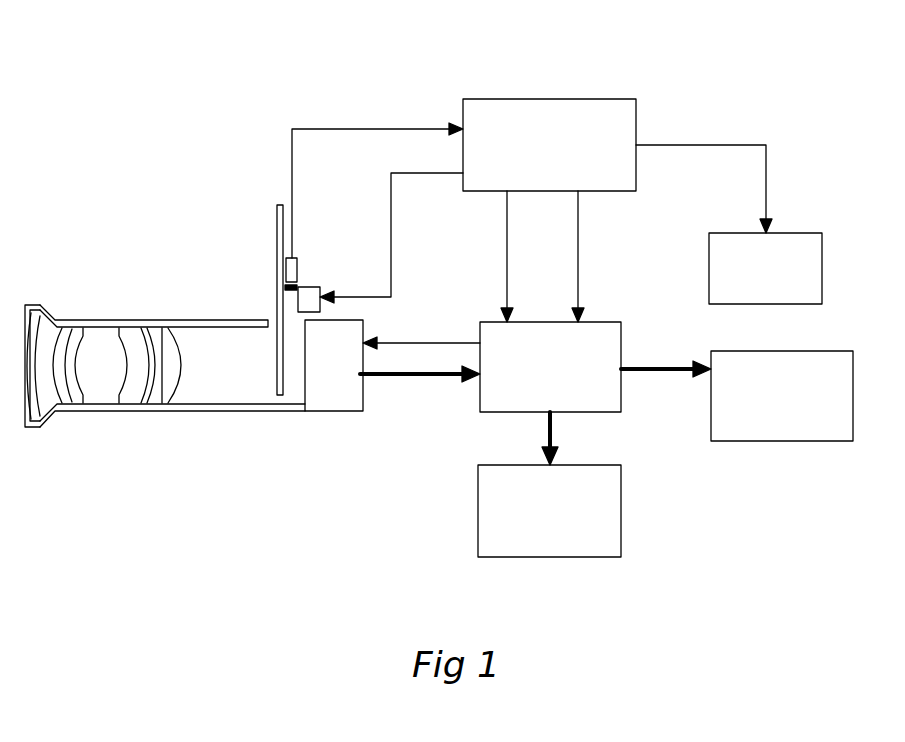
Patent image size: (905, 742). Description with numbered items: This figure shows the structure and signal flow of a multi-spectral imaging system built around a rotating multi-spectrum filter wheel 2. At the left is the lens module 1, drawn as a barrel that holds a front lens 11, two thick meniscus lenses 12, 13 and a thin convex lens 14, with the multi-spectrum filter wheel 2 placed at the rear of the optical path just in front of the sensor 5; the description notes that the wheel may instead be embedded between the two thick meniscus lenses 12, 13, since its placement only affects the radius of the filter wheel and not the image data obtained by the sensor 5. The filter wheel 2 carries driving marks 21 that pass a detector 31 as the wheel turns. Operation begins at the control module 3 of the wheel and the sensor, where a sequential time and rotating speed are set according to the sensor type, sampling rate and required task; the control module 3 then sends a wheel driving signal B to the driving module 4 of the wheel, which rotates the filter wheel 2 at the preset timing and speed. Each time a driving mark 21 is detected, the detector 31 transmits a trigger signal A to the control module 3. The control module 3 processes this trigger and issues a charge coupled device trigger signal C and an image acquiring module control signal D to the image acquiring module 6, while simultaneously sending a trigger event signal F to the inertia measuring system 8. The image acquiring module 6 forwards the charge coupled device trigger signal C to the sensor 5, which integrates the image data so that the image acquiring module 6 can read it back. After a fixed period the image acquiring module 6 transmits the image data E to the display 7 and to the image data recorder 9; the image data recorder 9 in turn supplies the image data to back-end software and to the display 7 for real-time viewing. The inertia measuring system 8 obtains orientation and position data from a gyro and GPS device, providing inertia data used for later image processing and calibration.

The lens housing 1 is at (200, 323).
The first lens element 11 is at (40, 322).
The thick meniscus lens 12 is at (68, 333).
The thick meniscus lens 13 is at (123, 333).
The thin convex lens 14 is at (165, 332).
The multi-spectrum filter wheel 2 is at (278, 210).
The driving marks 21 is at (310, 250).
The detector 31 is at (292, 258).
The driving module of the wheel 4 is at (313, 293).
The sensor 5 is at (355, 342).
The control module of the wheel and the sensor 3 is at (578, 114).
The image acquiring module 6 is at (607, 342).
The display 7 is at (607, 480).
The inertia measuring system 8 is at (793, 240).
The image data recorder 9 is at (785, 367).
The trigger signal A is at (320, 128).
The wheel driving signal B is at (398, 172).
The charge coupled device trigger signal C is at (509, 262).
The image acquiring module control signal D is at (579, 255).
The image data E is at (387, 372).
The trigger event signal F is at (692, 137).